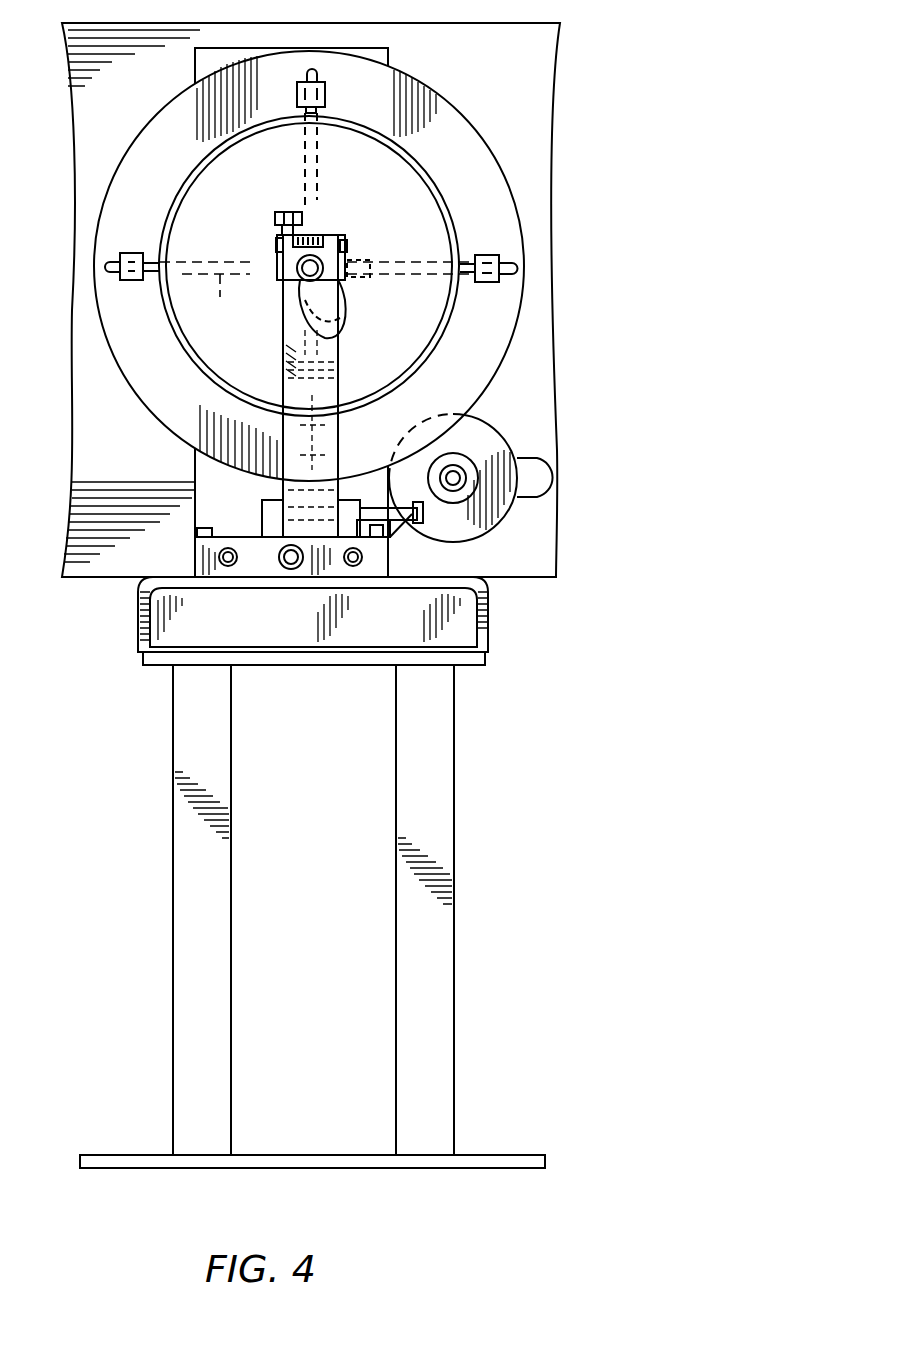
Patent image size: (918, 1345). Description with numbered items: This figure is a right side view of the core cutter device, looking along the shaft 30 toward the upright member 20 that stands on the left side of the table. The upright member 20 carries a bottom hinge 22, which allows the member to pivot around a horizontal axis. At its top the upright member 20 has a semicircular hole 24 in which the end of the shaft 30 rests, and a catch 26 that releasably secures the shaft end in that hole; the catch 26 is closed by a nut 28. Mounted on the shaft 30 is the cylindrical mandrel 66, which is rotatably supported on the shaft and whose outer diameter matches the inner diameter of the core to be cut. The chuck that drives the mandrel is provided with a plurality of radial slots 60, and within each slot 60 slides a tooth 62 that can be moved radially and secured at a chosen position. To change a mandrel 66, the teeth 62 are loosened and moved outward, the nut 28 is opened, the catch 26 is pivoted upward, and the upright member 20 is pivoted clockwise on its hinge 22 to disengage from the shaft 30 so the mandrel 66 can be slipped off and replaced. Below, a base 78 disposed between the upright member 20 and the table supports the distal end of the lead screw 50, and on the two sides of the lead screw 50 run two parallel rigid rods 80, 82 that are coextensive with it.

The upright member 20 is at (368, 268).
The bottom hinge 22 is at (417, 531).
The semicircular hole 24 is at (346, 245).
The catch 26 is at (320, 232).
The nut 28 is at (312, 205).
The shaft 30 is at (343, 337).
The lead screw 50 is at (291, 570).
The radial slots 60 is at (315, 297).
The tooth 62 is at (132, 282).
The cylindrical mandrel 66 is at (490, 360).
The base 78 is at (207, 570).
The rigid rod 80 is at (230, 567).
The rigid rod 82 is at (353, 567).